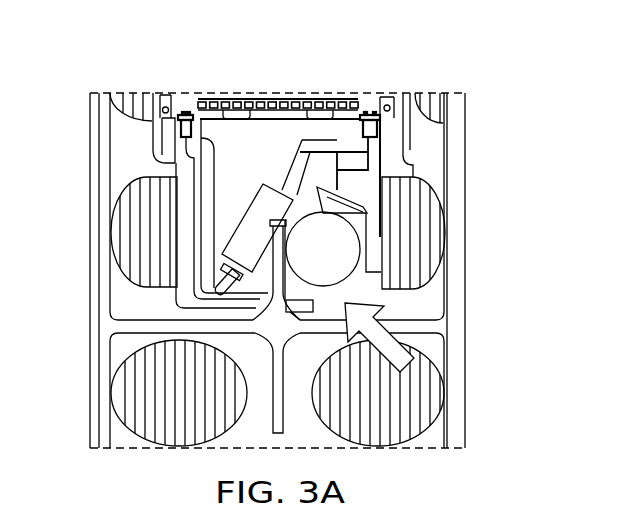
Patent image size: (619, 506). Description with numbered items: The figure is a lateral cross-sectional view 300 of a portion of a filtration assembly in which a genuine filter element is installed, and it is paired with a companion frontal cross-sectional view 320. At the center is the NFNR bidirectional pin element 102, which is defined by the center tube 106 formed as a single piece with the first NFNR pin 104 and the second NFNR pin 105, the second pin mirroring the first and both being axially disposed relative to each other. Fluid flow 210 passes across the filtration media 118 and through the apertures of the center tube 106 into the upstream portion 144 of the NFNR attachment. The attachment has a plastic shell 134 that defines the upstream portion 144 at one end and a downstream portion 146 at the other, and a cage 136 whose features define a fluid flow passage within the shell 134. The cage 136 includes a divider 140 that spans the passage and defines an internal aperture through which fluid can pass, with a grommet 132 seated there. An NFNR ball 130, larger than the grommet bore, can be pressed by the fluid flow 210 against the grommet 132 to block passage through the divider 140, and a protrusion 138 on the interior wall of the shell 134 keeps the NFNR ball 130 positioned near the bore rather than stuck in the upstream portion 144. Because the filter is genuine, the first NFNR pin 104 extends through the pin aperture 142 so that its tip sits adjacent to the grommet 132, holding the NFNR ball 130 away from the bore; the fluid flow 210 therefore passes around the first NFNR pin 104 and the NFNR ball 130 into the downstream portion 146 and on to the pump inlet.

The lateral cross-sectional view 300 is at (153, 76).
The NFNR bidirectional pin element 102 is at (479, 328).
The first NFNR pin 104 is at (280, 190).
The second NFNR pin 105 is at (280, 417).
The center tube 106 is at (97, 328).
The filtration media 118 is at (127, 383).
The NFNR ball 130 is at (342, 237).
The grommet 132 is at (232, 245).
The shell 134 is at (160, 265).
The cage 136 is at (176, 147).
The protrusion 138 is at (350, 198).
The divider 140 is at (341, 147).
The pin aperture 142 is at (250, 306).
The upstream portion 144 is at (360, 296).
The downstream portion 146 is at (262, 130).
The fluid flow 210 is at (412, 361).
The frontal cross-sectional view 320 is at (503, 497).